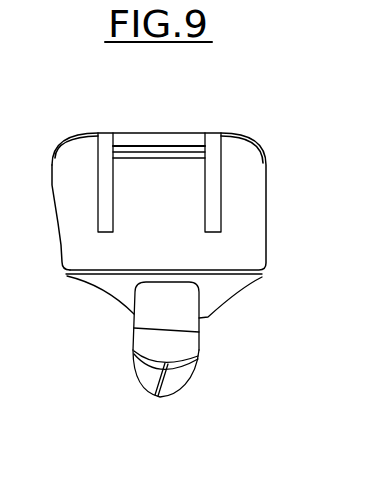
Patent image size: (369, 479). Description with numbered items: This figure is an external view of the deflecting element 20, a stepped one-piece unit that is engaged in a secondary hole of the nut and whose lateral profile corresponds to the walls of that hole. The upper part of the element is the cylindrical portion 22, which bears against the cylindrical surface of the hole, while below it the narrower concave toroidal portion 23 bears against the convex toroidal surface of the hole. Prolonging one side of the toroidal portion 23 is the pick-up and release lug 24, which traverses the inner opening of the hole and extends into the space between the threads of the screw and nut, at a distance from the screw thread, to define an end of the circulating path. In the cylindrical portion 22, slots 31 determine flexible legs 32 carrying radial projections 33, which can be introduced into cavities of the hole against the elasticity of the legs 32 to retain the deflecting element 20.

The deflecting element 20 is at (278, 144).
The cylindrical portion 22 is at (62, 242).
The concave toroidal portion 23 is at (110, 290).
The pick-up and release lug 24 is at (145, 373).
The slot 31 is at (212, 134).
The flexible leg 32 is at (184, 188).
The radial projection 33 is at (142, 150).